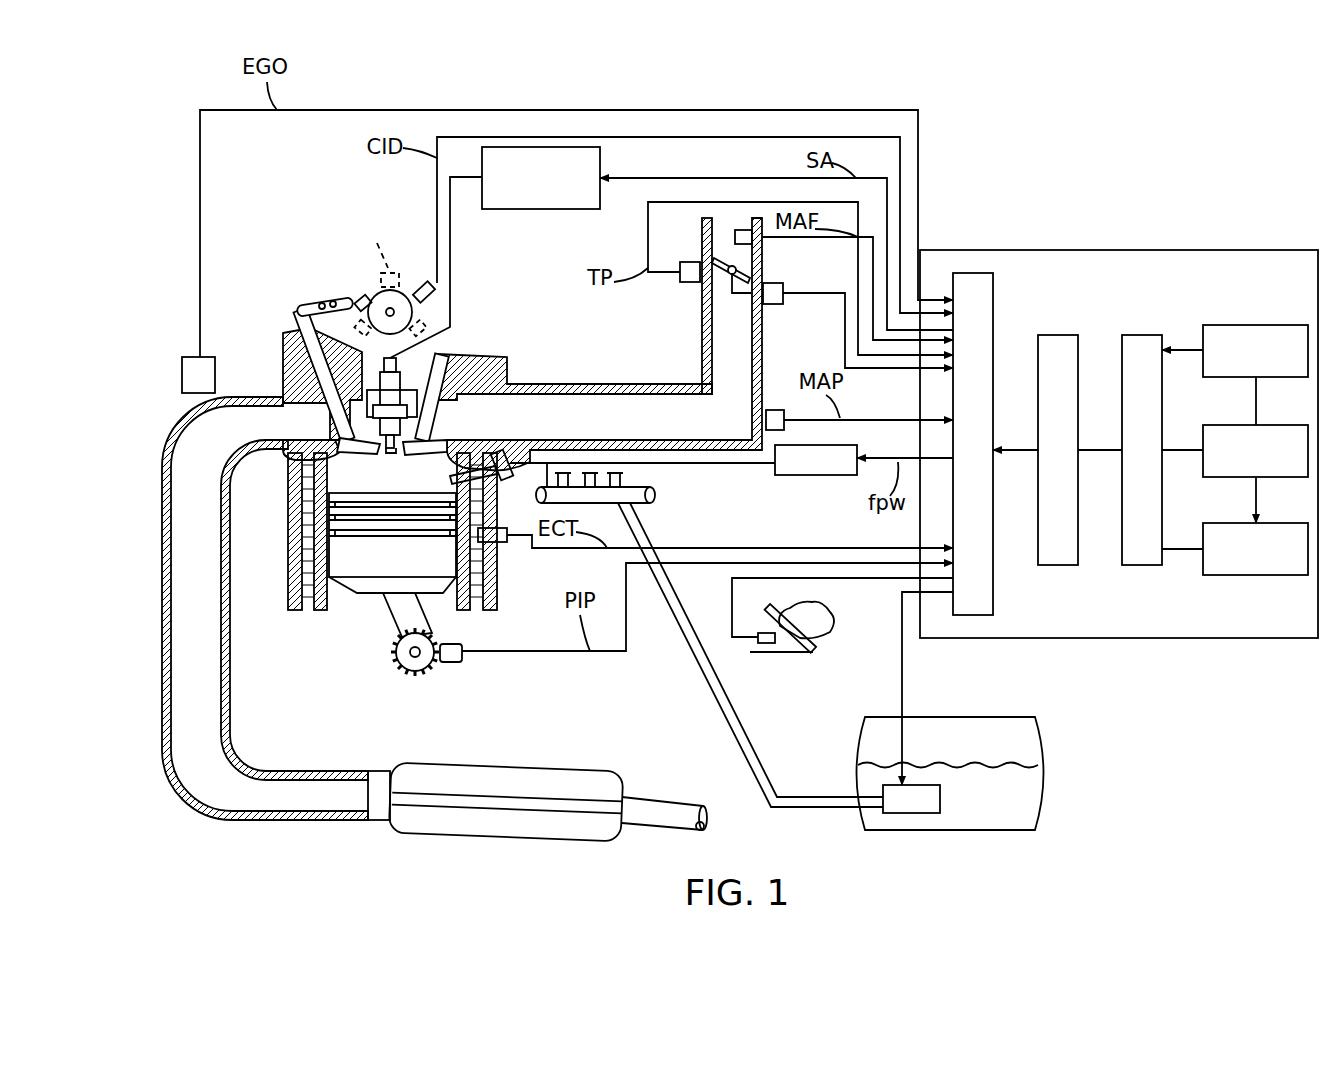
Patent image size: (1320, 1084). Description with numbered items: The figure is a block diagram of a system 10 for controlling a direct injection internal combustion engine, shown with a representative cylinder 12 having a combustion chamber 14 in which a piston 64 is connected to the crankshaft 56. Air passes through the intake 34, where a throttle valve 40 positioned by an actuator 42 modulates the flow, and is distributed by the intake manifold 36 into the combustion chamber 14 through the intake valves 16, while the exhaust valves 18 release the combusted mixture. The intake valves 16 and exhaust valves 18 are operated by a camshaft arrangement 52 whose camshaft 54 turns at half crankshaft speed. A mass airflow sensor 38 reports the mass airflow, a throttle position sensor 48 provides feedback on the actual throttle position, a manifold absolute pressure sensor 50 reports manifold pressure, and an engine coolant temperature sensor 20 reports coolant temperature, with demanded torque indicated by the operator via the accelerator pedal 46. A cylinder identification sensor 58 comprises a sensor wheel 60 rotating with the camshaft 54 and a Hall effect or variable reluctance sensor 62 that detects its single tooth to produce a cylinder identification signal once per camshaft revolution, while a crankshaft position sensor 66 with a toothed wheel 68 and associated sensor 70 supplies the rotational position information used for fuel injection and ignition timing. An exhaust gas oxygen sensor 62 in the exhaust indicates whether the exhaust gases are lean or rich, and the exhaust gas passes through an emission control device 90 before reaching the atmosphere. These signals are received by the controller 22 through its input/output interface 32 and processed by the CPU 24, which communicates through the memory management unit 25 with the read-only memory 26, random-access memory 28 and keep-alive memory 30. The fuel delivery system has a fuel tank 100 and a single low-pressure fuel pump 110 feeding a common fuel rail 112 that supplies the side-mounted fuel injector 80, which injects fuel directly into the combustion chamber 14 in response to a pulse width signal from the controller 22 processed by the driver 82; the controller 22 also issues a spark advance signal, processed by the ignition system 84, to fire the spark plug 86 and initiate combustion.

The system 10 is at (342, 248).
The cylinder 12 is at (330, 610).
The combustion chamber 14 is at (342, 480).
The intake valve 16 is at (452, 360).
The exhaust valve 18 is at (338, 442).
The engine coolant temperature sensor 20 is at (540, 552).
The controller 22 is at (1118, 250).
The microprocessor 24 is at (1055, 335).
The memory management unit 25 is at (1140, 335).
The read-only memory 26 is at (1275, 325).
The random-access memory 28 is at (1275, 523).
The keep-alive memory 30 is at (1275, 425).
The input/output interface 32 is at (995, 578).
The intake 34 is at (718, 360).
The intake manifold 36 is at (648, 403).
The mass airflow sensor 38 is at (742, 230).
The throttle valve 40 is at (720, 280).
The actuator 42 is at (783, 290).
The accelerator pedal 46 is at (802, 648).
The throttle position sensor 48 is at (690, 262).
The manifold absolute pressure sensor 50 is at (778, 410).
The camshaft arrangement 52 is at (342, 292).
The camshaft 54 is at (390, 277).
The crankshaft 56 is at (413, 653).
The cylinder identification sensor 58 is at (406, 268).
The sensor wheel 60 is at (413, 310).
The sensor 62 is at (447, 278).
The piston 64 is at (377, 586).
The crankshaft position sensor 66 is at (418, 688).
The toothed wheel 68 is at (405, 688).
The sensor 70 is at (451, 665).
The fuel injector 80 is at (506, 448).
The driver 82 is at (818, 478).
The ignition system 84 is at (602, 172).
The spark plug 86 is at (398, 380).
The emission control device 90 is at (520, 766).
The fuel tank 100 is at (1045, 778).
The fuel pump 110 is at (916, 815).
The fuel rail 112 is at (658, 497).